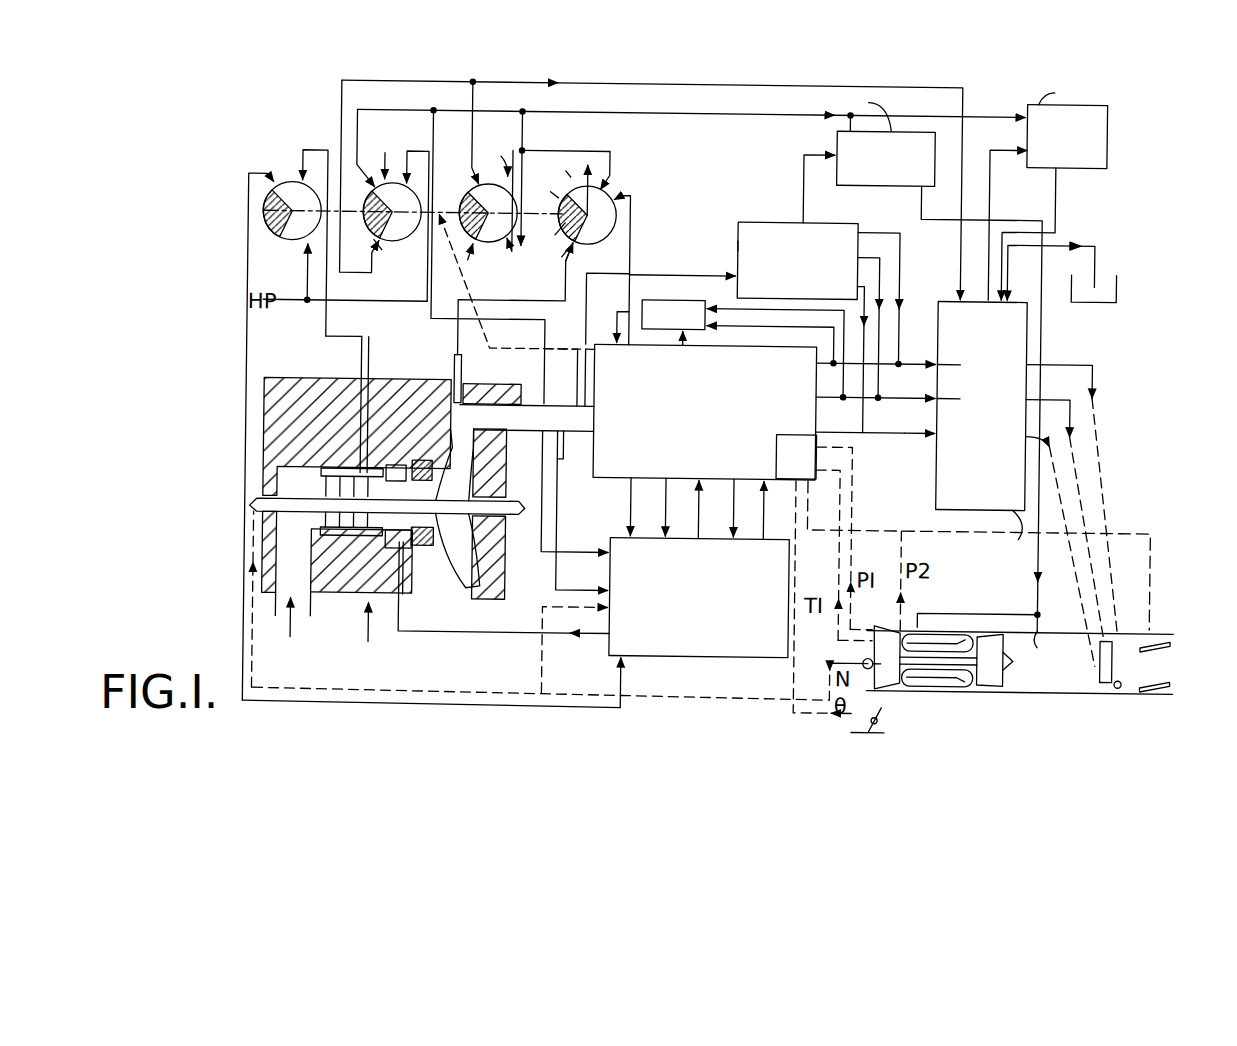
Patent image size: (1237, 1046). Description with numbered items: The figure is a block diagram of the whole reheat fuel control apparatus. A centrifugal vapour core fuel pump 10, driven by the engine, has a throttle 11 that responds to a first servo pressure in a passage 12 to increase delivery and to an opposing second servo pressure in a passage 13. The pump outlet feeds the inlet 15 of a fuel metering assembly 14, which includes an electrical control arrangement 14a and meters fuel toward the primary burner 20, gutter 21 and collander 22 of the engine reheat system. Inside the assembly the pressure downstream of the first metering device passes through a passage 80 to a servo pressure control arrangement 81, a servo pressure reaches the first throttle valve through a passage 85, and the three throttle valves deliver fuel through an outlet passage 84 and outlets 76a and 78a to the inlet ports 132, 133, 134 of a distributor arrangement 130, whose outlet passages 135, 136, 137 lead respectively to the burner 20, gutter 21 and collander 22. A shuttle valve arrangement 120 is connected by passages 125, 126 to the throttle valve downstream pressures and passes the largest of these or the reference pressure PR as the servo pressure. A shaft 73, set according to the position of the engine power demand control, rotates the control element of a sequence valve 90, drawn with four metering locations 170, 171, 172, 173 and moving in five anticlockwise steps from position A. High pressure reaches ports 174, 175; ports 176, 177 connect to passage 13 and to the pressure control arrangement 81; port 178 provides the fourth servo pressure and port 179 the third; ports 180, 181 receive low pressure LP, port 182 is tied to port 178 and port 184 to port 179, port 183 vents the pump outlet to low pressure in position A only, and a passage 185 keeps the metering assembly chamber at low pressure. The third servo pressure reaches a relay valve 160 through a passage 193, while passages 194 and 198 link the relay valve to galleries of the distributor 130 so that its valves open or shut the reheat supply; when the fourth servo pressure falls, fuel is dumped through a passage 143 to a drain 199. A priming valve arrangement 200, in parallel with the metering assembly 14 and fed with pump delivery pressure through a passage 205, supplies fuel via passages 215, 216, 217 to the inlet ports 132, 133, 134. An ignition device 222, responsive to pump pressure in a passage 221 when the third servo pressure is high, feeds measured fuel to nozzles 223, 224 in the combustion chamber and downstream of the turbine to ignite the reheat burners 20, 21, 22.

The centrifugal vapour core fuel pump 10 is at (428, 527).
The throttle 11 is at (387, 549).
The passage 12 is at (403, 612).
The passage 13 is at (368, 365).
The fuel metering assembly 14 is at (598, 440).
The electrical control arrangement 14a is at (797, 456).
The inlet 15 is at (578, 400).
The primary burner 20 is at (1096, 670).
The gutter 21 is at (1108, 683).
The collander 22 is at (1122, 688).
The shaft 73 is at (513, 281).
The outlet 76a is at (862, 425).
The outlet 78a is at (816, 378).
The passage 80 is at (628, 491).
The servo pressure control arrangement 81 is at (767, 642).
The outlet passage 84 is at (885, 434).
The passage 85 is at (614, 310).
The sequence valve 90 is at (688, 158).
The shuttle valve arrangement 120 is at (694, 312).
The passage 125 is at (803, 310).
The passage 126 is at (778, 329).
The distributor arrangement 130 is at (1022, 345).
The inlet port 132 is at (933, 440).
The inlet port 133 is at (940, 395).
The inlet port 134 is at (940, 360).
The outlet passage 135 is at (1026, 432).
The outlet passage 136 is at (1044, 400).
The outlet passage 137 is at (1052, 360).
The passage 143 is at (1084, 234).
The relay valve 160 is at (1098, 134).
The metering location 170 is at (278, 140).
The metering location 171 is at (388, 179).
The metering location 172 is at (467, 262).
The metering location 173 is at (617, 165).
The port 174 is at (299, 246).
The port 175 is at (401, 242).
The port 176 is at (300, 165).
The port 177 is at (271, 186).
The port 178 is at (375, 258).
The port 179 is at (353, 176).
The port 180 is at (497, 150).
The port 181 is at (605, 188).
The port 182 is at (472, 189).
The port 183 is at (588, 246).
The port 184 is at (493, 215).
The passage 185 is at (632, 200).
The passage 193 is at (960, 112).
The passage 194 is at (1055, 202).
The passage 198 is at (988, 200).
The drain 199 is at (1101, 298).
The priming valve arrangement 200 is at (738, 242).
The passage 205 is at (690, 273).
The passage 215 is at (864, 300).
The passage 216 is at (879, 279).
The passage 217 is at (899, 244).
The passage 221 is at (801, 190).
The ignition device 222 is at (863, 170).
The nozzle 223 is at (920, 635).
The nozzle 224 is at (1036, 640).